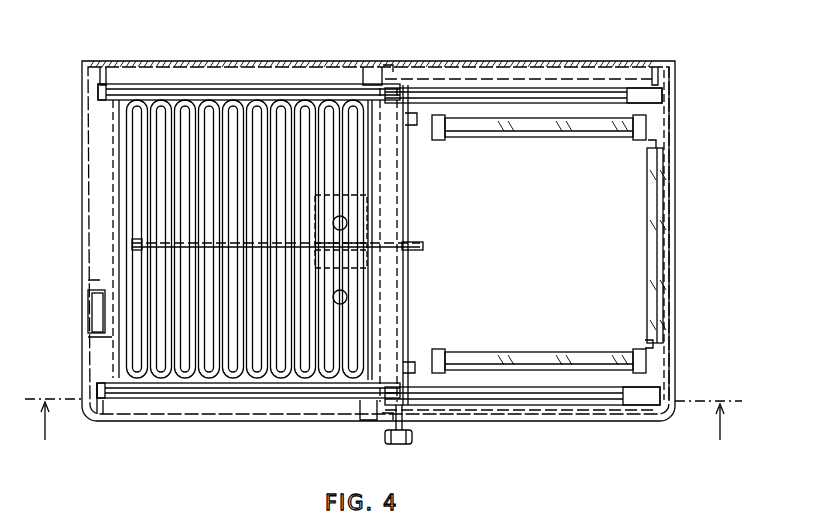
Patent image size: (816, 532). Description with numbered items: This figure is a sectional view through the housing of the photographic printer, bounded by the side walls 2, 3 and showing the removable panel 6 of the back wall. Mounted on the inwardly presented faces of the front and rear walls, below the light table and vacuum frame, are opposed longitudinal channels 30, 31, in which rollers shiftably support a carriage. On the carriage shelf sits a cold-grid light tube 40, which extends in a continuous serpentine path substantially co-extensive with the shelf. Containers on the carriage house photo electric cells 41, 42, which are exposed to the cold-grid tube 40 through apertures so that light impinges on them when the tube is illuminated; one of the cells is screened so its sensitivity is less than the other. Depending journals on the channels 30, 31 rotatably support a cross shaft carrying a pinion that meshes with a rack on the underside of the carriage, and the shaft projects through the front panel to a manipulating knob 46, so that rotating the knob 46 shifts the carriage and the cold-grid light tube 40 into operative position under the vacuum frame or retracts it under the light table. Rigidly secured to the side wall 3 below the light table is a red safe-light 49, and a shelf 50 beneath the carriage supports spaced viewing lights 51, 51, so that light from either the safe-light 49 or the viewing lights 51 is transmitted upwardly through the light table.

The side wall 2 is at (84, 206).
The side wall 3 is at (676, 240).
The panel 6 is at (383, 408).
The longitudinal channel 30 is at (222, 88).
The longitudinal channel 31 is at (232, 400).
The cold-grid light tube 40 is at (124, 142).
The photo electric cell 41 is at (334, 216).
The photo electric cell 42 is at (335, 304).
The manipulating knob 46 is at (385, 438).
The red safe-light 49 is at (652, 278).
The shelf 50 is at (466, 80).
The viewing light 51 is at (528, 138).